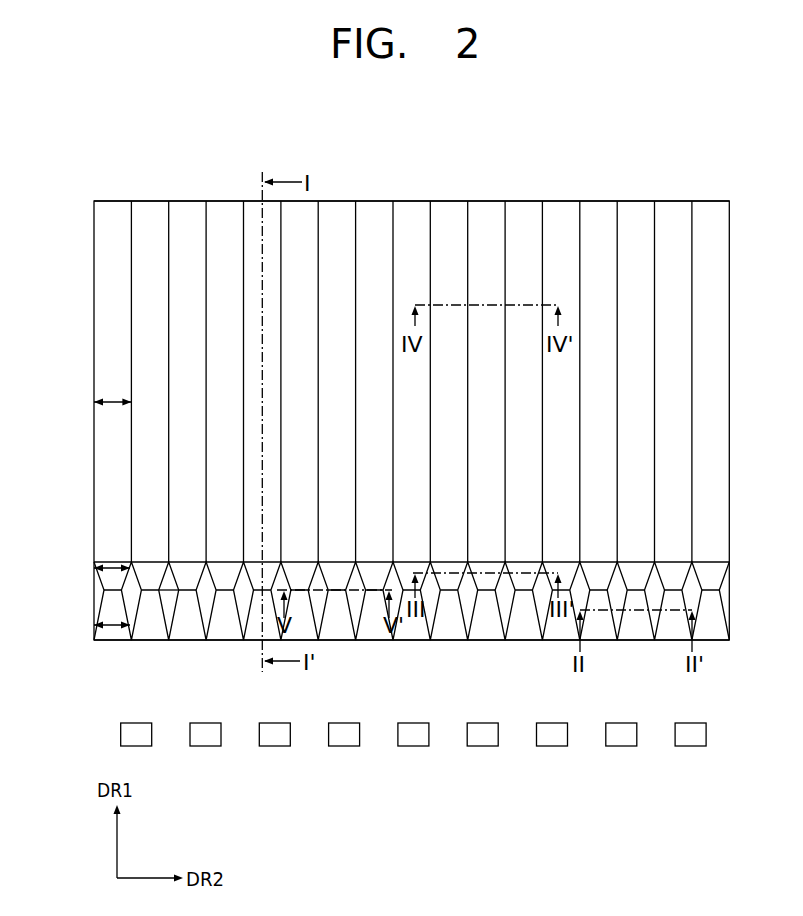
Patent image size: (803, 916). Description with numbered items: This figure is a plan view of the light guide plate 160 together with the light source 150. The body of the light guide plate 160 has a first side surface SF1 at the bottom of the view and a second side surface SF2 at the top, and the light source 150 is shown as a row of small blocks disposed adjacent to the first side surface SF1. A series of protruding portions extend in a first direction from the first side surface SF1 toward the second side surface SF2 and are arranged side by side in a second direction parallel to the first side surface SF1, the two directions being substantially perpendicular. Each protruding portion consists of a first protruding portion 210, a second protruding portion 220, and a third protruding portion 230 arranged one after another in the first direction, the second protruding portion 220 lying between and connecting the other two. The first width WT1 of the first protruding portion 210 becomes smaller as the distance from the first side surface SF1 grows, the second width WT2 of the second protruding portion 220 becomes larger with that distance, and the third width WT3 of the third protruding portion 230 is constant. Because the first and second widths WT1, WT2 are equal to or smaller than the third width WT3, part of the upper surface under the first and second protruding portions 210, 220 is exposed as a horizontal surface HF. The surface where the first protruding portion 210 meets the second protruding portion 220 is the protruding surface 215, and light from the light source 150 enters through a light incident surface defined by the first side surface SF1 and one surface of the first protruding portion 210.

The light guide plate 160 is at (729, 196).
The third protruding portion 230 is at (105, 450).
The second protruding portion 220 is at (110, 582).
The first protruding portion 210 is at (110, 634).
The protruding surface 215 is at (231, 591).
The light source 150 is at (690, 748).
The horizontal surface HF is at (165, 603).
The first width WT1 is at (110, 624).
The second width WT2 is at (110, 567).
The third width WT3 is at (112, 401).
The first side surface SF1 is at (117, 641).
The second side surface SF2 is at (112, 201).